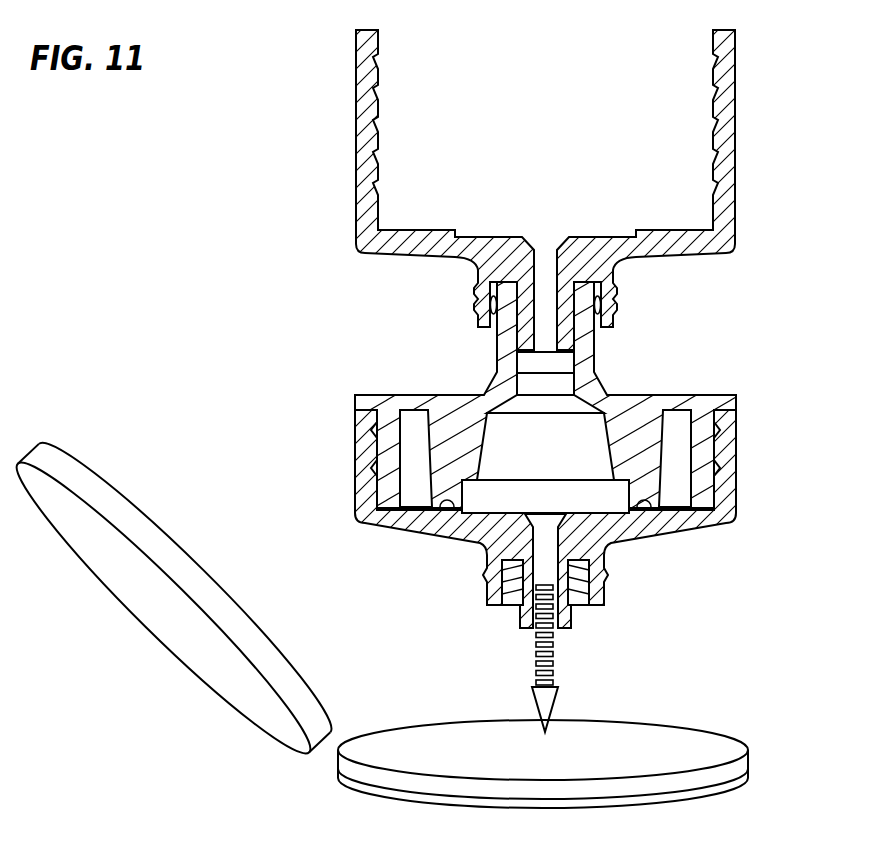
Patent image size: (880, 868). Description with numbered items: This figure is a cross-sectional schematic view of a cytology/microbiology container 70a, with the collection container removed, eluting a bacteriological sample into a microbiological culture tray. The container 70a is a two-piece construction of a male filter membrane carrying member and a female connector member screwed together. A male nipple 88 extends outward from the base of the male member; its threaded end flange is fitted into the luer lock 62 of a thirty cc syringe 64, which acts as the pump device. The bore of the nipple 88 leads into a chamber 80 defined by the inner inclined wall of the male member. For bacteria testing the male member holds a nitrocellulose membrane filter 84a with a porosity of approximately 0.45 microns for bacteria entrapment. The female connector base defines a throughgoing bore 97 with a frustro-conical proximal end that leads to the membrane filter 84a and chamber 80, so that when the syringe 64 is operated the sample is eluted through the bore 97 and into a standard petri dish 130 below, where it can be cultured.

The syringe 64 is at (738, 193).
The luer lock 62 is at (620, 312).
The male nipple 88 is at (500, 316).
The cytology/microbiology container 70a is at (738, 433).
The chamber 80 is at (558, 458).
The nitrocellulose membrane filter 84a is at (602, 497).
The throughgoing bore 97 is at (534, 633).
The petri dish 130 is at (750, 768).